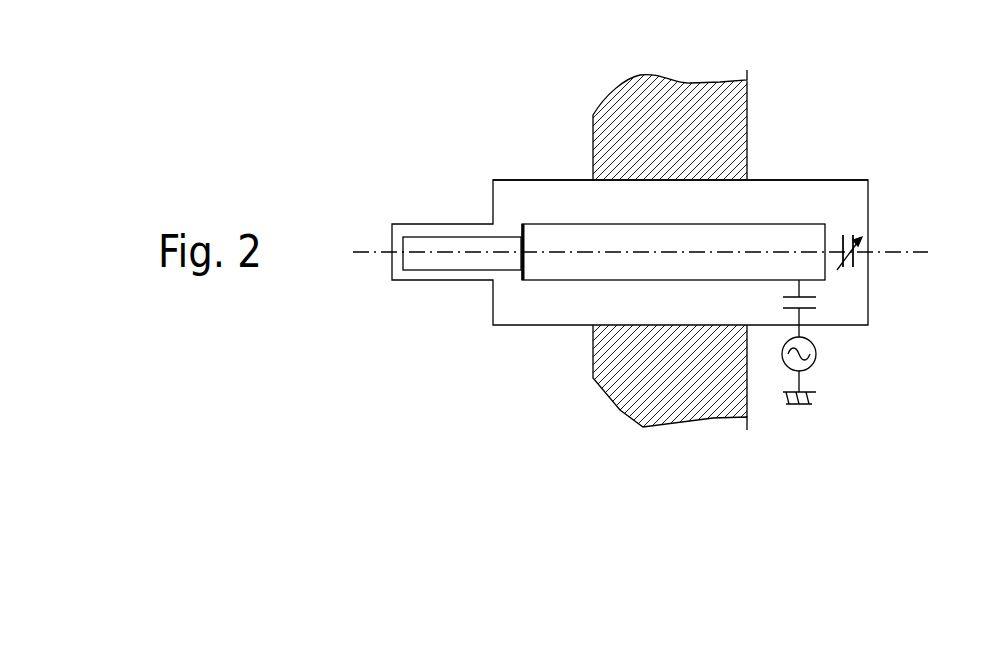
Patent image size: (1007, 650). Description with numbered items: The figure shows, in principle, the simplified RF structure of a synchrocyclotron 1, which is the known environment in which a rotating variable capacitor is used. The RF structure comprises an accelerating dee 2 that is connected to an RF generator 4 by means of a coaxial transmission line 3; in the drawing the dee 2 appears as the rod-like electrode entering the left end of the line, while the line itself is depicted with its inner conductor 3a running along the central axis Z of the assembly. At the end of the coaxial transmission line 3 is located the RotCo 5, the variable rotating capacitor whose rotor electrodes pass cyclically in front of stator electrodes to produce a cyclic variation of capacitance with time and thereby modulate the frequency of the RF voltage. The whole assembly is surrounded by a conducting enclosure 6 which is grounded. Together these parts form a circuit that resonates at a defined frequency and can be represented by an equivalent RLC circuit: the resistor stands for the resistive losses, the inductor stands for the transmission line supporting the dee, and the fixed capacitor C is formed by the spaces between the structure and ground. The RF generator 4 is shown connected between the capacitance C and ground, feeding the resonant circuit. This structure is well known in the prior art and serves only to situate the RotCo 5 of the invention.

The synchrocyclotron 1 is at (770, 138).
The accelerating dee 2 is at (480, 270).
The coaxial transmission line 3 is at (503, 166).
The inner tube 3a is at (620, 267).
The RF generator 4 is at (813, 362).
The RotCo 5 is at (850, 272).
The conducting enclosure 6 is at (795, 182).
The fixed capacitor C is at (841, 232).
The axis Z is at (902, 252).